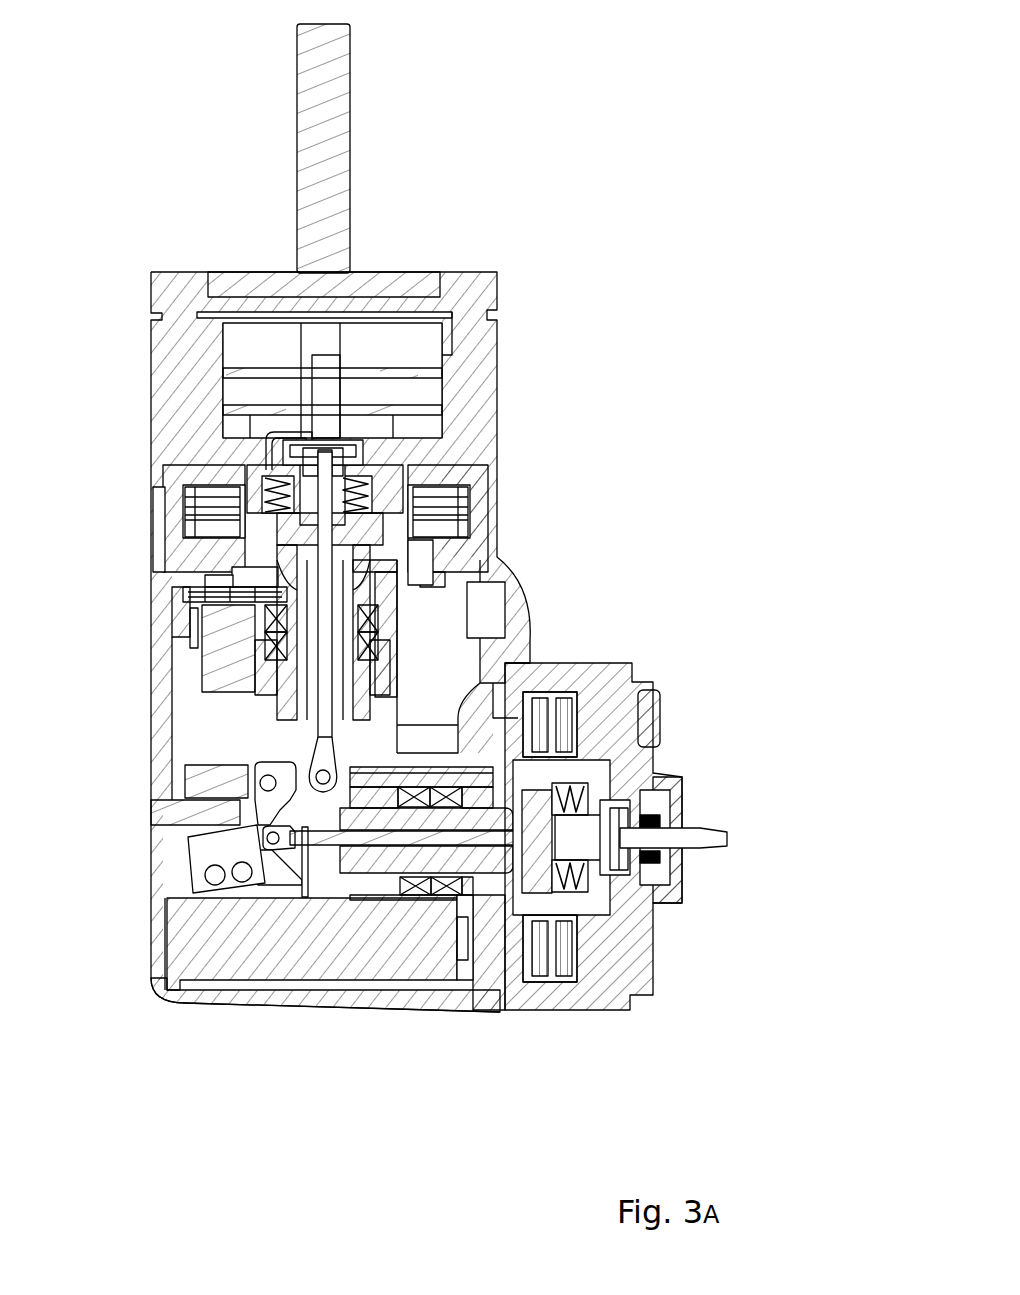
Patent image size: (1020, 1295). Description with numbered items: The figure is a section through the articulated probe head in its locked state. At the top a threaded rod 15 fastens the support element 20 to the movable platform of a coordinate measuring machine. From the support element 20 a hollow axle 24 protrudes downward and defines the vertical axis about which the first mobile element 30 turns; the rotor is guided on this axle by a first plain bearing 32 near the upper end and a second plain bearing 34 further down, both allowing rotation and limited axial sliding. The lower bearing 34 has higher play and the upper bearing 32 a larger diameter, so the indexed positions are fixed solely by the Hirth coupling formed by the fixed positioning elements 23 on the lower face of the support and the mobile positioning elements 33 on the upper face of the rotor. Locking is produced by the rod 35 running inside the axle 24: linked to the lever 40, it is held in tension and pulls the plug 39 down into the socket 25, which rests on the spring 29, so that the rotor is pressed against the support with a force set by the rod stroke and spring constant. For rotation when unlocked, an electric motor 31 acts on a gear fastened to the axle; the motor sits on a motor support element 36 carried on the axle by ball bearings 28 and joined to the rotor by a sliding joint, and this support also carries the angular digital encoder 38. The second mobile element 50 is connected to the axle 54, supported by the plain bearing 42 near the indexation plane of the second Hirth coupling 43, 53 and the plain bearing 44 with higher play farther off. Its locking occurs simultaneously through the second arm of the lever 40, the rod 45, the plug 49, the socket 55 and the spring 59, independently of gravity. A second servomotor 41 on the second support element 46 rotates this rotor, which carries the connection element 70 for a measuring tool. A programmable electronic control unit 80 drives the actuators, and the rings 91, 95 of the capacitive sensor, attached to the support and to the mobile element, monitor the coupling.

The threaded rod 15 is at (352, 99).
The support element 20 is at (167, 385).
The fixed positioning elements 23 is at (470, 473).
The axle 24 is at (285, 718).
The socket 25 is at (258, 453).
The ball bearings 28 is at (383, 612).
The spring 29 is at (373, 453).
The first mobile element 30 is at (520, 622).
The electric motor 31 is at (257, 697).
The first plain bearing 32 is at (447, 550).
The mobile positioning elements 33 is at (477, 528).
The second plain bearing 34 is at (320, 726).
The rod 35 is at (325, 742).
The motor support element 36 is at (215, 658).
The angular digital encoder 38 is at (193, 683).
The plug 39 is at (215, 480).
The lever 40 is at (282, 817).
The second servomotor 41 is at (228, 947).
The plain bearing 42 is at (516, 992).
The Hirth coupling teeth 43 is at (540, 997).
The plain bearing 44 is at (382, 846).
The rod 45 is at (322, 848).
The second support element 46 is at (466, 967).
The plug 49 is at (608, 810).
The second mobile element 50 is at (617, 685).
The Hirth coupling teeth 53 is at (583, 690).
The axle 54 is at (445, 893).
The socket 55 is at (595, 850).
The spring 59 is at (633, 887).
The connection element 70 is at (710, 838).
The programmable electronic control unit 80 is at (403, 373).
The ring 91 is at (183, 508).
The ring 95 is at (193, 520).